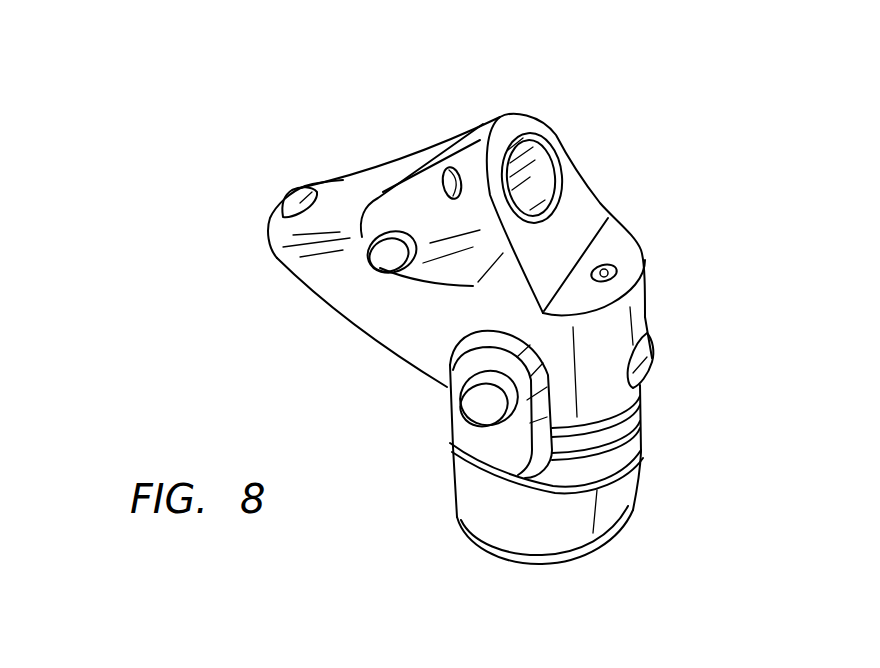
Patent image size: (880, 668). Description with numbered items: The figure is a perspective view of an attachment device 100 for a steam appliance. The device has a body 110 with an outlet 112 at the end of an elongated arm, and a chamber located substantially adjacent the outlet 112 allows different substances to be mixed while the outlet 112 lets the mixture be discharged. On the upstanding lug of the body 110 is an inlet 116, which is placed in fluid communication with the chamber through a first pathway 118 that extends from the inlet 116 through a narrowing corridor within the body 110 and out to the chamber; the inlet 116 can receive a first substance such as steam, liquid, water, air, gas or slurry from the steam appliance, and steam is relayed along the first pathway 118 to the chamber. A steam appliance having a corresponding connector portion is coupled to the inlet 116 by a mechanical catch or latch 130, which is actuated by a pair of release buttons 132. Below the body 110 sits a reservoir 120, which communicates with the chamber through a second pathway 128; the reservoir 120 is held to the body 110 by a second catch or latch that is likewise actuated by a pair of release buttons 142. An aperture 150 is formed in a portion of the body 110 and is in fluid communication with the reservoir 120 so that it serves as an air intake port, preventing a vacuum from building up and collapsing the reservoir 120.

The attachment device 100 is at (190, 176).
The body 110 is at (578, 222).
The outlet 112 is at (287, 242).
The inlet 116 is at (510, 177).
The first pathway 118 is at (418, 207).
The reservoir 120 is at (613, 506).
The second pathway 128 is at (400, 332).
The latch 130 is at (514, 174).
The release buttons 132 is at (384, 268).
The release buttons 142 is at (478, 412).
The aperture 150 is at (615, 272).